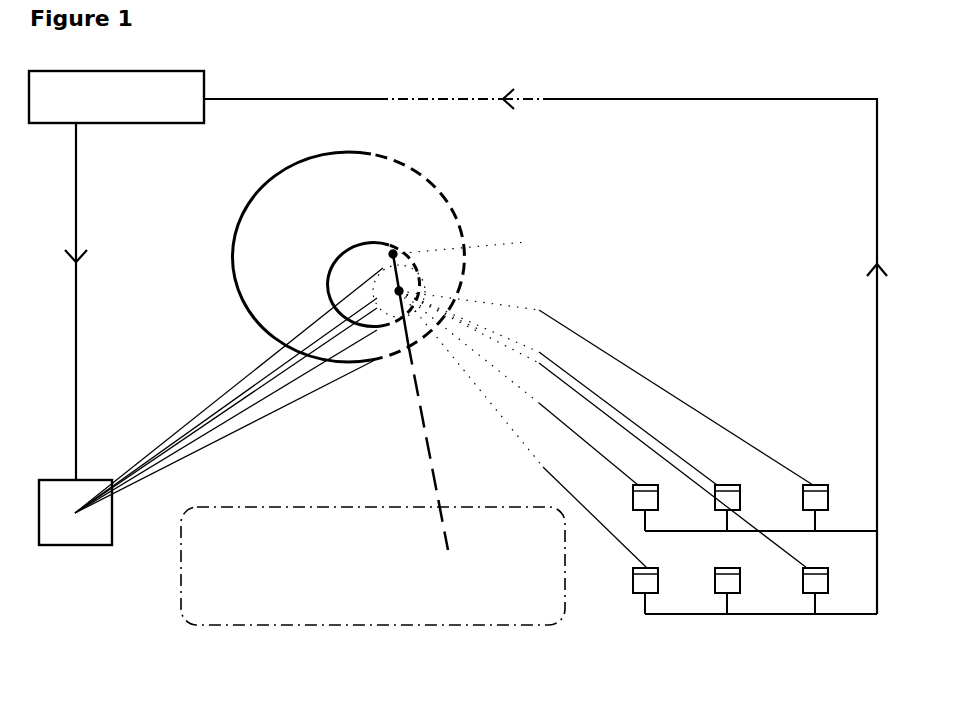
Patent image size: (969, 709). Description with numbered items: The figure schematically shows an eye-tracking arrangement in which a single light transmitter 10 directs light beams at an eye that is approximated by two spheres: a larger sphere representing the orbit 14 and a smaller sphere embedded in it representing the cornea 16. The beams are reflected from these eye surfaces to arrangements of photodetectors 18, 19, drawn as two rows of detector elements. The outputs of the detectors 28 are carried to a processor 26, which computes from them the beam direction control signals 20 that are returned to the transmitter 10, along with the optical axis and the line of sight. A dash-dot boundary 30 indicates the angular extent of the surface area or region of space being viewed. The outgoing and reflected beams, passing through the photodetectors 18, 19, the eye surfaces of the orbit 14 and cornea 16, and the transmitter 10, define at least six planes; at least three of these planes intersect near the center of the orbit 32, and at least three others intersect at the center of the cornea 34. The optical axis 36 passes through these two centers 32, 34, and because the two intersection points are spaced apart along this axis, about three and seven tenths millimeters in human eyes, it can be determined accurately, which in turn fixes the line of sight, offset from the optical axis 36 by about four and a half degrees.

The light transmitter 10 is at (80, 545).
The orbit 14 is at (277, 240).
The cornea 16 is at (373, 247).
The photodetectors 18 is at (755, 508).
The photodetectors 19 is at (755, 591).
The beam direction control signals 20 is at (94, 301).
The processor 26 is at (116, 97).
The outputs of the detectors 28 is at (545, 345).
The boundary 30 is at (373, 566).
The center of the orbit 32 is at (540, 245).
The center of the cornea 34 is at (540, 298).
The optical axis 36 is at (411, 400).